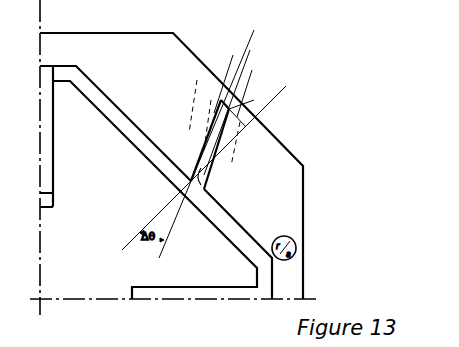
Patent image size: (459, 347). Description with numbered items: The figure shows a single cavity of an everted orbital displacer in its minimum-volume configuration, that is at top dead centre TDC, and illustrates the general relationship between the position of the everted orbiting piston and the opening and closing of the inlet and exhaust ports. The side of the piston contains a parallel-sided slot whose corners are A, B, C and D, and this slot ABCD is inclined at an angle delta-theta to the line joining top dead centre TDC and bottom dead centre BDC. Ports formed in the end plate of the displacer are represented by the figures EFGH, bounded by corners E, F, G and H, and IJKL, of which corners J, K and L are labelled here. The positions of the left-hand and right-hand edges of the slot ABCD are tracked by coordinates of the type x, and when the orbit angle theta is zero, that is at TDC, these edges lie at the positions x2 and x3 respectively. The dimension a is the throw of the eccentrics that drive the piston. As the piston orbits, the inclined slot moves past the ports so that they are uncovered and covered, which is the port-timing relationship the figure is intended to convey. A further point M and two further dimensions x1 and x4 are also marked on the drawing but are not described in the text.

The slot corner A is at (196, 142).
The slot corner B is at (222, 107).
The slot corner C is at (252, 100).
The slot corner D is at (216, 152).
The port corner E is at (187, 120).
The port corner F is at (206, 80).
The port corner G is at (213, 93).
The port corner H is at (200, 135).
The port corner J is at (219, 158).
The port corner K is at (242, 118).
The port corner L is at (229, 160).
The reference point M is at (242, 123).
The throw of the eccentrics a is at (200, 188).
The slot edge position coordinate x is at (196, 168).
The distance x1 is at (254, 90).
The left-hand slot edge position at TDC x2 is at (238, 109).
The right-hand slot edge position at TDC x3 is at (210, 137).
The distance x4 is at (226, 78).
The top dead centre TDC is at (193, 177).
The bottom dead centre BDC is at (295, 78).